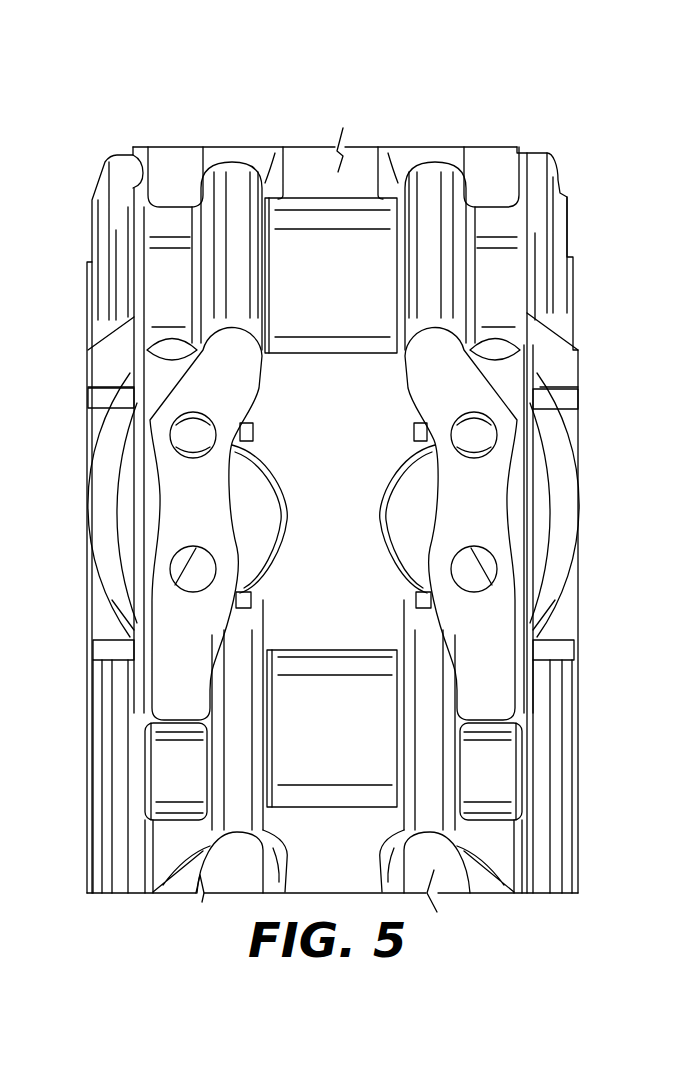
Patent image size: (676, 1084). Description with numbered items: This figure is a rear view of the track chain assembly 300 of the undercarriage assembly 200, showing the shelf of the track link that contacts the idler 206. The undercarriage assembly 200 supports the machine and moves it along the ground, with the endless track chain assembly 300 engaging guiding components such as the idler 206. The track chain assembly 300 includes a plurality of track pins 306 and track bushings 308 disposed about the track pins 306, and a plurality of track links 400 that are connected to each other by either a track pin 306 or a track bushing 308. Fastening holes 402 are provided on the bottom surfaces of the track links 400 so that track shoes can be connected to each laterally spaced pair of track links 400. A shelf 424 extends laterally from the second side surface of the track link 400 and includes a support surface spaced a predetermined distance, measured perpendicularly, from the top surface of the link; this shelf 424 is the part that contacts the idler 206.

The undercarriage assembly 200 is at (411, 82).
The track chain assembly 300 is at (524, 140).
The track pin 306 is at (533, 290).
The track bushing 308 is at (354, 296).
The idler 206 is at (354, 594).
The track link 400 is at (493, 648).
The fastening hole 402 is at (207, 423).
The shelf 424 is at (409, 478).